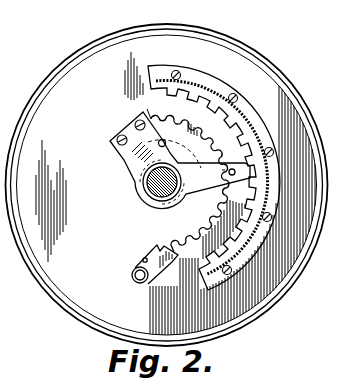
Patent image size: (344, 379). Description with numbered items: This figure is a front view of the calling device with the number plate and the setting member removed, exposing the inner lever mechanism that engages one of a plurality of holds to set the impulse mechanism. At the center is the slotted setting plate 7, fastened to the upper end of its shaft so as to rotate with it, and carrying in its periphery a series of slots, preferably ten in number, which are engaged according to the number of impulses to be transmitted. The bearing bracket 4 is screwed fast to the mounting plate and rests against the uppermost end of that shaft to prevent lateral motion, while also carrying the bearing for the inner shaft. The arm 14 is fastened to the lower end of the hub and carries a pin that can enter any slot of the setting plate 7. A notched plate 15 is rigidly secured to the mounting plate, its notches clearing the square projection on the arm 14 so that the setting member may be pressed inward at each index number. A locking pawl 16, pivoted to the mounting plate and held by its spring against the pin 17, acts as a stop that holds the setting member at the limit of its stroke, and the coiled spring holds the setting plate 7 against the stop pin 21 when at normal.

The bearing bracket 4 is at (133, 153).
The slotted setting plate 7 is at (158, 111).
The arm 14 is at (166, 204).
The notched plate 15 is at (204, 79).
The locking pawl 16 is at (133, 276).
The pin 17 is at (145, 258).
The stop pin 21 is at (158, 142).